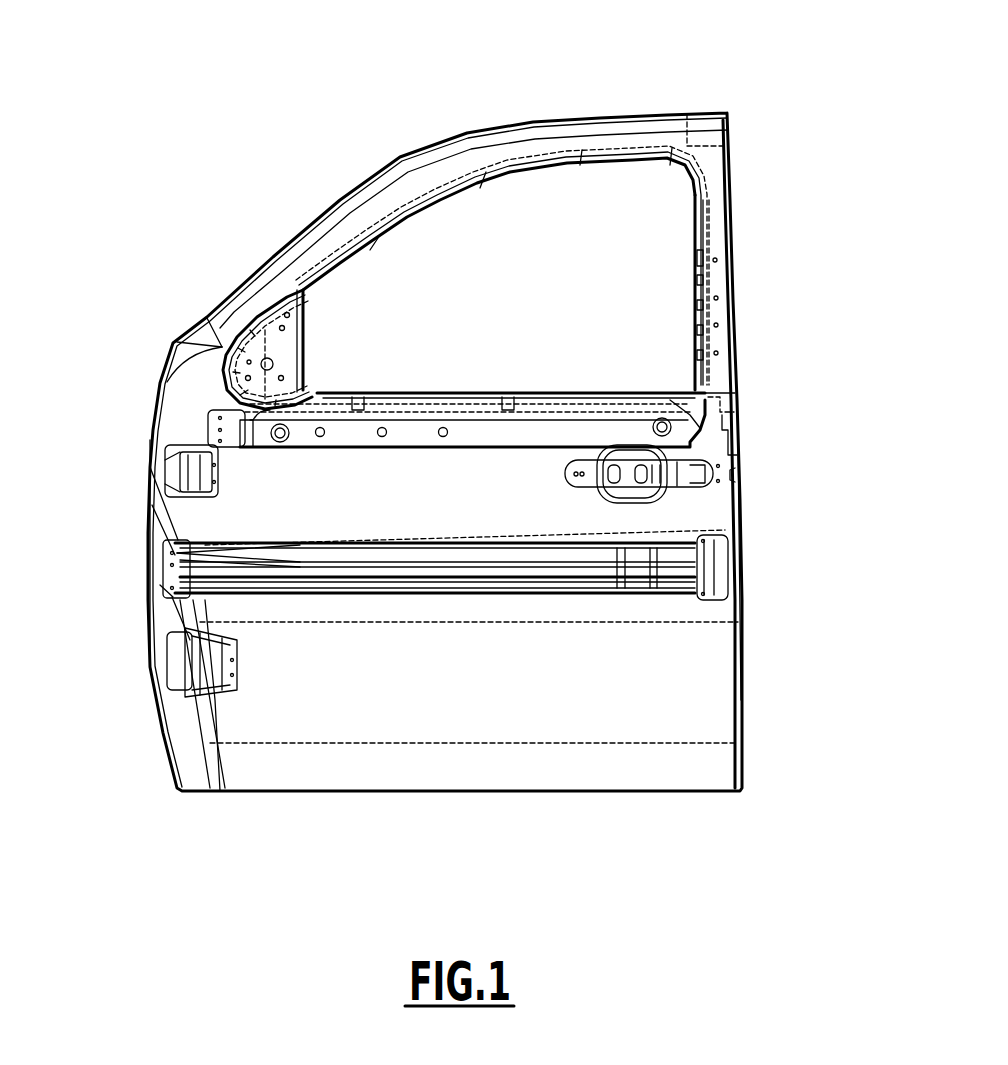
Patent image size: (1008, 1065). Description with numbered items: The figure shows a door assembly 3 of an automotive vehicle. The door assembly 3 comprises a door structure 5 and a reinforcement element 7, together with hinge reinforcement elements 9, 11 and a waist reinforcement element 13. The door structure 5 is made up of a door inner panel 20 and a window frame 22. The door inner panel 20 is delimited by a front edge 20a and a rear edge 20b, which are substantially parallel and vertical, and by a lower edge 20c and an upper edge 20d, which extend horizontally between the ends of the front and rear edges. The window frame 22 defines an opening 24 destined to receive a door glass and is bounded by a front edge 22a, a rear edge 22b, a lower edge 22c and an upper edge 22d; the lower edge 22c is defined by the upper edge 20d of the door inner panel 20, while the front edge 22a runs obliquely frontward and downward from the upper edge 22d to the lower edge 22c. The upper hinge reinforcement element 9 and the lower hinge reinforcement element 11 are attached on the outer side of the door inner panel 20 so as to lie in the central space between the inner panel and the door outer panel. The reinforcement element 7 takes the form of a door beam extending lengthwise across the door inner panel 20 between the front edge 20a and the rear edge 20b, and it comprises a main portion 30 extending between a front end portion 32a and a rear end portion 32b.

The door assembly 3 is at (745, 147).
The door structure 5 is at (740, 395).
The reinforcement element 7 is at (675, 543).
The upper hinge reinforcement element 9 is at (190, 472).
The lower hinge reinforcement element 11 is at (195, 672).
The waist reinforcement element 13 is at (590, 388).
The door inner panel 20 is at (700, 673).
The front edge 20a is at (150, 555).
The rear edge 20b is at (742, 453).
The lower edge 20c is at (430, 793).
The upper edge 20d is at (683, 392).
The window frame 22 is at (665, 127).
The front edge 22a is at (292, 270).
The rear edge 22b is at (720, 243).
The lower edge 22c is at (360, 398).
The upper edge 22d is at (520, 137).
The opening 24 is at (656, 220).
The main portion 30 is at (560, 592).
The front end portion 32a is at (165, 594).
The rear end portion 32b is at (735, 578).